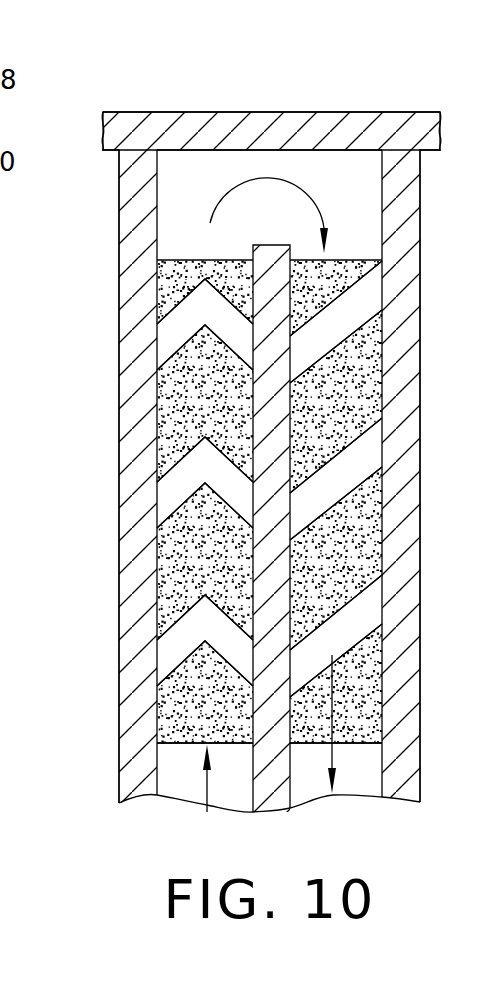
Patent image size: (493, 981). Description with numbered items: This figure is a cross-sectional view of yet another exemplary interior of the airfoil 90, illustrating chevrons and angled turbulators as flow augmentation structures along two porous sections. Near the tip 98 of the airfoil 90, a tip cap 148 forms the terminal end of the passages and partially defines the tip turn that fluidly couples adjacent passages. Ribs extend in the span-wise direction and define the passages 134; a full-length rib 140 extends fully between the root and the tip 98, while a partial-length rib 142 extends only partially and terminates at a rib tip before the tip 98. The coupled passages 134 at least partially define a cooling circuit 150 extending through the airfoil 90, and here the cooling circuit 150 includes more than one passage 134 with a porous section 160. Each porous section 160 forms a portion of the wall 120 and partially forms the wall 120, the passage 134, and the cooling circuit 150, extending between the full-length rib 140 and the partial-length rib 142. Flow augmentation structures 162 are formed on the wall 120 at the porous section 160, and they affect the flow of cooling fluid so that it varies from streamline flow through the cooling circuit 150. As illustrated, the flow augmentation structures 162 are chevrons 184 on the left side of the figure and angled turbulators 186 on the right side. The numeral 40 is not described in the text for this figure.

The airfoil 90 is at (180, 70).
The tip 98 is at (281, 96).
The tip cap 148 is at (327, 112).
The wall 120 is at (367, 188).
The full-length rib 140 is at (119, 710).
The partial-length rib 142 is at (290, 787).
The porous section 160 is at (165, 418).
The chevrons 184 is at (165, 285).
The angled turbulators 186 is at (357, 304).
The flow augmentation structure 162 is at (153, 341).
The passage 134 is at (235, 793).
The cooling circuit 150 is at (178, 789).
The partial numeral 40 is at (19, 643).